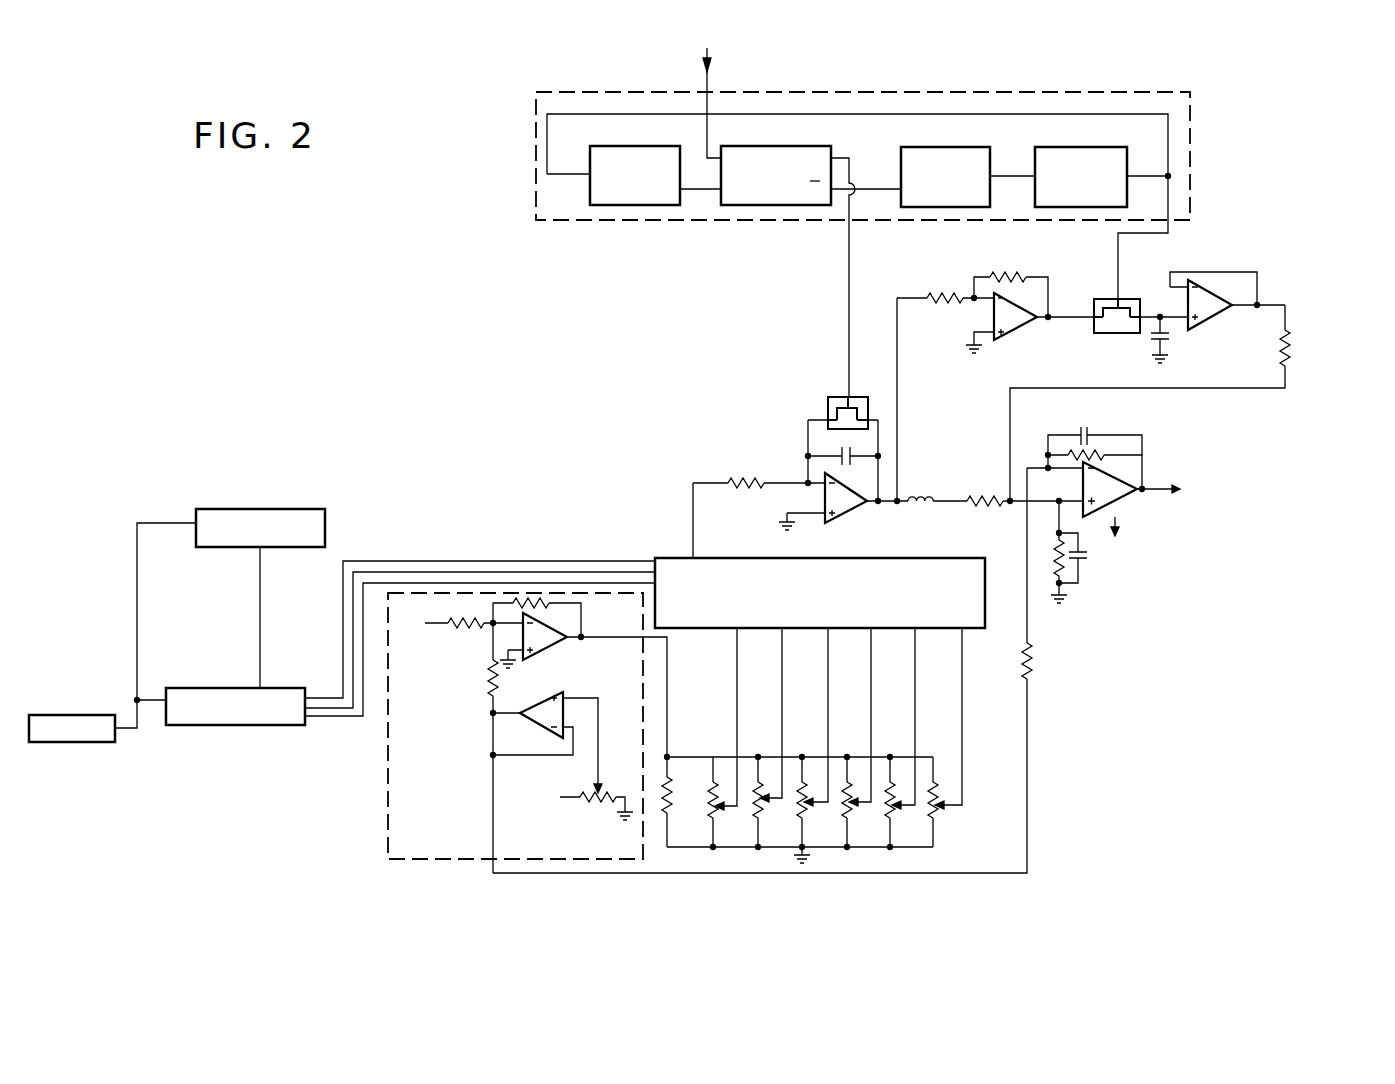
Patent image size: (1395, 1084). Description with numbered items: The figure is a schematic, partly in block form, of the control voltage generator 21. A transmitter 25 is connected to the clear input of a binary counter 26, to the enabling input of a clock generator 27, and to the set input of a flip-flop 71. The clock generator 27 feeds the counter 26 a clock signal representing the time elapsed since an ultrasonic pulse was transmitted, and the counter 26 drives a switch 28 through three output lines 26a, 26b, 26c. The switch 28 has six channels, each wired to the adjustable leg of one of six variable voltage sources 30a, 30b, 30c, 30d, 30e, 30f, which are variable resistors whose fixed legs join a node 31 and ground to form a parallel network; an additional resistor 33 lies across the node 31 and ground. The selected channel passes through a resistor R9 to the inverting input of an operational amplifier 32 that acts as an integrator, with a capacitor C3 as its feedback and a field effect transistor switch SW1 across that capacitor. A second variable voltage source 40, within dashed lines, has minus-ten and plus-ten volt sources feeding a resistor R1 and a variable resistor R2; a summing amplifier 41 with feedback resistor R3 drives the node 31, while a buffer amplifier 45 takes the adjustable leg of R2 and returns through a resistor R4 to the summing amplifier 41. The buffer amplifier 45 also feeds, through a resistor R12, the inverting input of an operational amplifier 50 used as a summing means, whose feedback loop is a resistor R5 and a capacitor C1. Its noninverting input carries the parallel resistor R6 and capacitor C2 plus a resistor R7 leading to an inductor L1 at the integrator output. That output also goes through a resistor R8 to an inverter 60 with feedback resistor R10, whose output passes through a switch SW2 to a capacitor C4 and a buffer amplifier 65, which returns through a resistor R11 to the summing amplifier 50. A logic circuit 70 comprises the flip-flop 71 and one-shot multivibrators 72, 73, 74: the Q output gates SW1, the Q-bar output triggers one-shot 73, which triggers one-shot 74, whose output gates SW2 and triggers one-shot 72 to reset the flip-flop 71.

The control voltage generator 21 is at (327, 378).
The transmitter 25 is at (91, 715).
The counter 26 is at (252, 688).
The output line 26a is at (418, 560).
The output line 26b is at (353, 605).
The output line 26c is at (337, 721).
The clock generator 27 is at (263, 509).
The switch 28 is at (661, 558).
The variable voltage source 30a is at (709, 810).
The variable voltage source 30b is at (755, 808).
The variable voltage source 30c is at (799, 808).
The variable voltage source 30d is at (844, 808).
The variable voltage source 30e is at (887, 808).
The variable voltage source 30f is at (930, 808).
The node 31 is at (714, 756).
The operational amplifier 32 is at (850, 516).
The resistor 33 is at (672, 797).
The second variable voltage source 40 is at (388, 812).
The summing amplifier 41 is at (548, 644).
The buffer amplifier 45 is at (550, 699).
The operational amplifier 50 is at (1129, 495).
The operational amplifier 60 is at (1014, 331).
The buffer amplifier 65 is at (1216, 316).
The logic circuit 70 is at (550, 92).
The flip-flop 71 is at (812, 150).
The one-shot multivibrator 72 is at (592, 147).
The one-shot multivibrator 73 is at (977, 149).
The one-shot multivibrator 74 is at (1097, 146).
The resistor R1 is at (472, 629).
The variable resistor R2 is at (595, 808).
The feedback resistor R3 is at (552, 604).
The resistor R4 is at (487, 682).
The resistor R5 is at (1098, 458).
The resistor R6 is at (1052, 565).
The resistor R7 is at (982, 495).
The resistor R8 is at (952, 292).
The resistor R9 is at (757, 480).
The feedback resistor R10 is at (1011, 277).
The resistor R11 is at (1289, 353).
The resistor R12 is at (1032, 664).
The capacitor C1 is at (1082, 424).
The capacitor C2 is at (1086, 560).
The capacitor C3 is at (850, 465).
The capacitor C4 is at (1170, 340).
The inductor L1 is at (924, 497).
The switch SW1 is at (828, 397).
The switch SW2 is at (1118, 336).